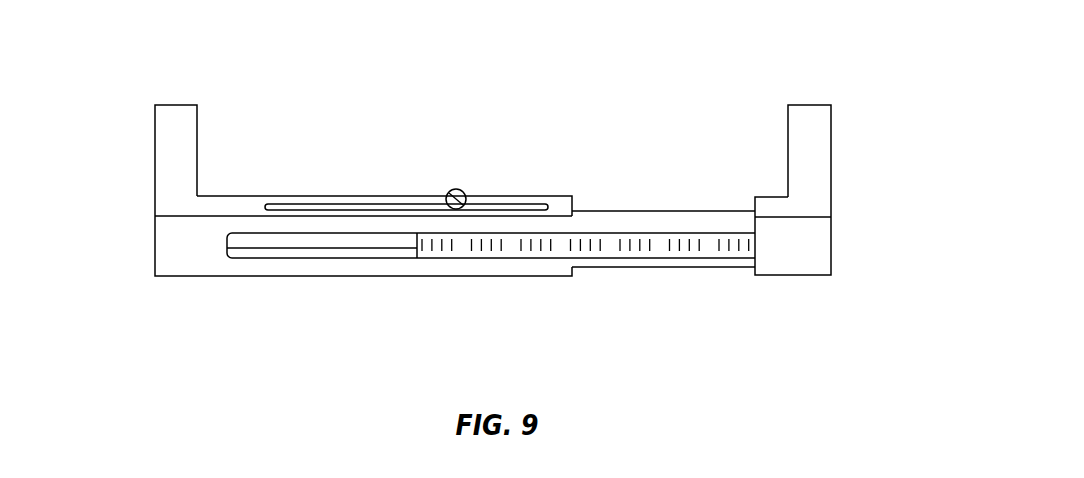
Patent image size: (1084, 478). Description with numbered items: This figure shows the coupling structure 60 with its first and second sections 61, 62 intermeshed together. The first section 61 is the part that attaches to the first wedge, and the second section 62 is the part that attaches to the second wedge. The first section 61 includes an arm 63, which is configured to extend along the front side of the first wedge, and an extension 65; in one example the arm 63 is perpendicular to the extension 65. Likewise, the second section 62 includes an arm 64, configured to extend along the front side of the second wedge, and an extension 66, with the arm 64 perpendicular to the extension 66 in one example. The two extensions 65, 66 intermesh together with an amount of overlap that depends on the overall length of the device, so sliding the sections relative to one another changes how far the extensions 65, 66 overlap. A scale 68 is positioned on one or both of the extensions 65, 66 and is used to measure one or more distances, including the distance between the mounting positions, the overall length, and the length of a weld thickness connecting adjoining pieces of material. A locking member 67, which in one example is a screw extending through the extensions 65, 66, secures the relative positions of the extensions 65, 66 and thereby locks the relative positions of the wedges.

The coupling structure 60 is at (588, 80).
The first section 61 is at (203, 293).
The second section 62 is at (797, 295).
The arm 63 is at (168, 152).
The arm 64 is at (818, 153).
The extension 65 is at (368, 196).
The extension 66 is at (622, 223).
The locking member 67 is at (447, 204).
The scale 68 is at (592, 240).